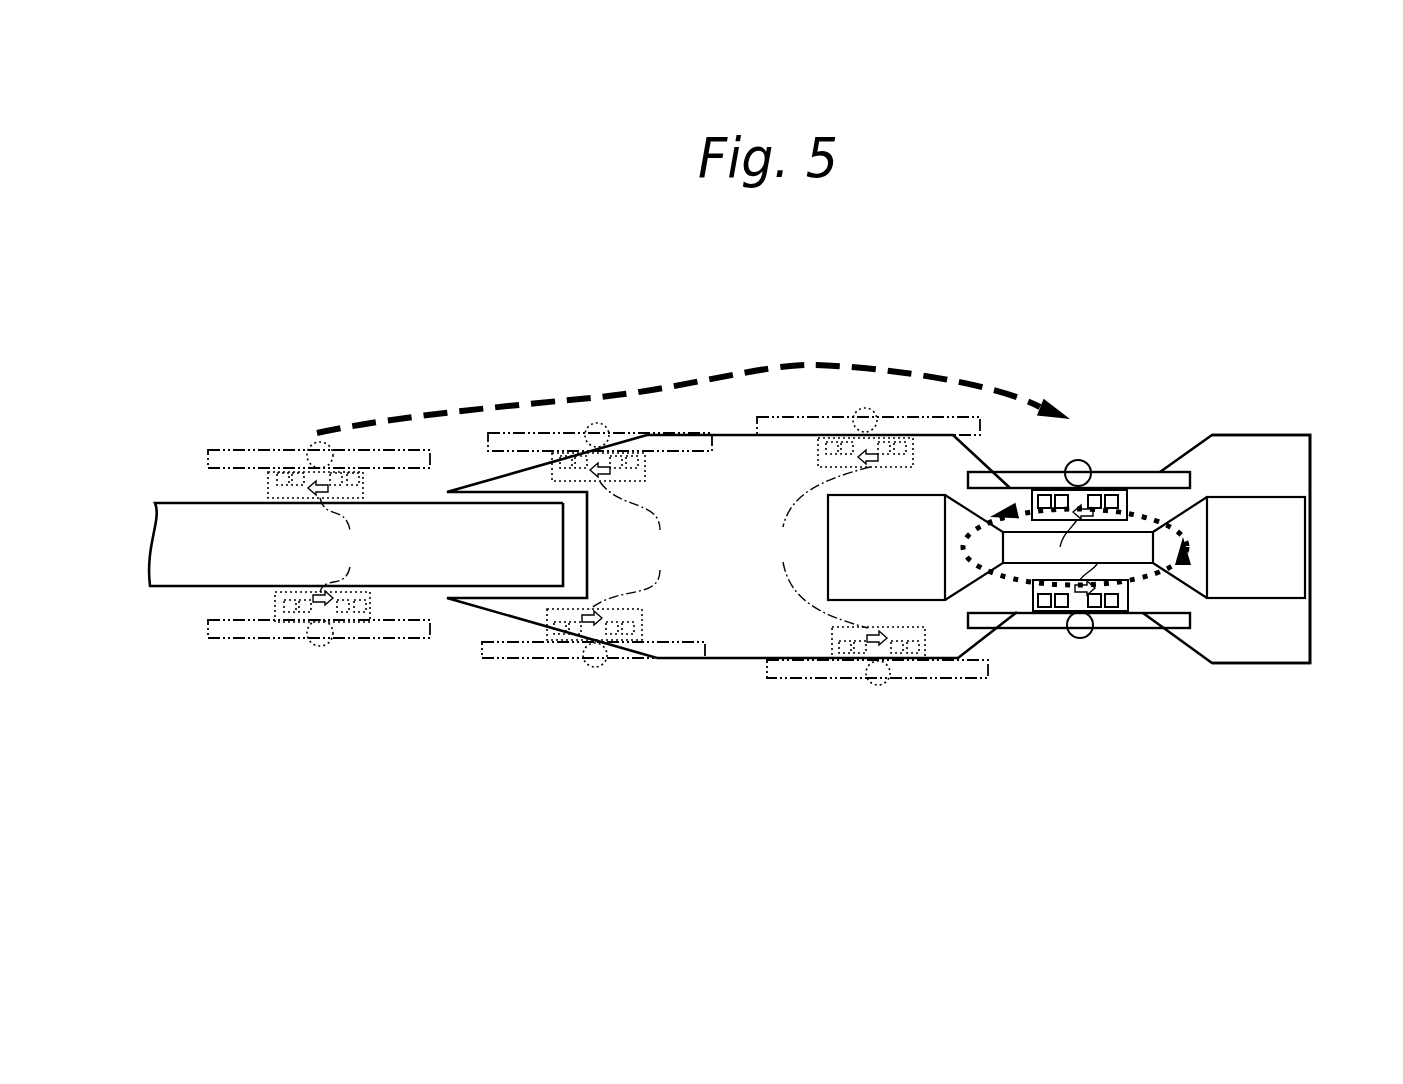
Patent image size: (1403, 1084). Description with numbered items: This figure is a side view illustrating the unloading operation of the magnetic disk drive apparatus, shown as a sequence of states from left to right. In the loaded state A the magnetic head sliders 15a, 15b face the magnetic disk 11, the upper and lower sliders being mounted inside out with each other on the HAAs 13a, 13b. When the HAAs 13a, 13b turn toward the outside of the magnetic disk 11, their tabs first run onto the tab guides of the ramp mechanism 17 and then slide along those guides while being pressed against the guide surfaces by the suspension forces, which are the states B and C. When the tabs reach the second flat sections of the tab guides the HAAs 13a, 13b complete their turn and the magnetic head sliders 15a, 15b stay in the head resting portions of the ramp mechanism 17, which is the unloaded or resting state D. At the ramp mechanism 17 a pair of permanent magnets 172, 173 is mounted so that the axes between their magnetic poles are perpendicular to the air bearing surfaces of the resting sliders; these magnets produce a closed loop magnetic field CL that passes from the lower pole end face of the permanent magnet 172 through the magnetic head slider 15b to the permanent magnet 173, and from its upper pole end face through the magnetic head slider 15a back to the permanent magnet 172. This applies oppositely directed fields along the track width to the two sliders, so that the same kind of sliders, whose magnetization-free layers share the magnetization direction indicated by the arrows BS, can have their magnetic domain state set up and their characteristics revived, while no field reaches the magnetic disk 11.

The magnetic disk 11 is at (182, 573).
The HAA 13a is at (1138, 478).
The HAA 13b is at (1133, 622).
The magnetic head slider 15a is at (1102, 490).
The magnetic head slider 15b is at (1110, 612).
The ramp mechanism 17 is at (1290, 453).
The permanent magnet 172 is at (963, 520).
The permanent magnet 173 is at (1190, 520).
The loaded state A is at (327, 372).
The unloading state B is at (608, 367).
The unloading state C is at (893, 340).
The unloaded state D is at (1105, 360).
The magnetization direction of magnetization-free layer BS is at (709, 547).
The closed loop magnetic field CL is at (1157, 577).